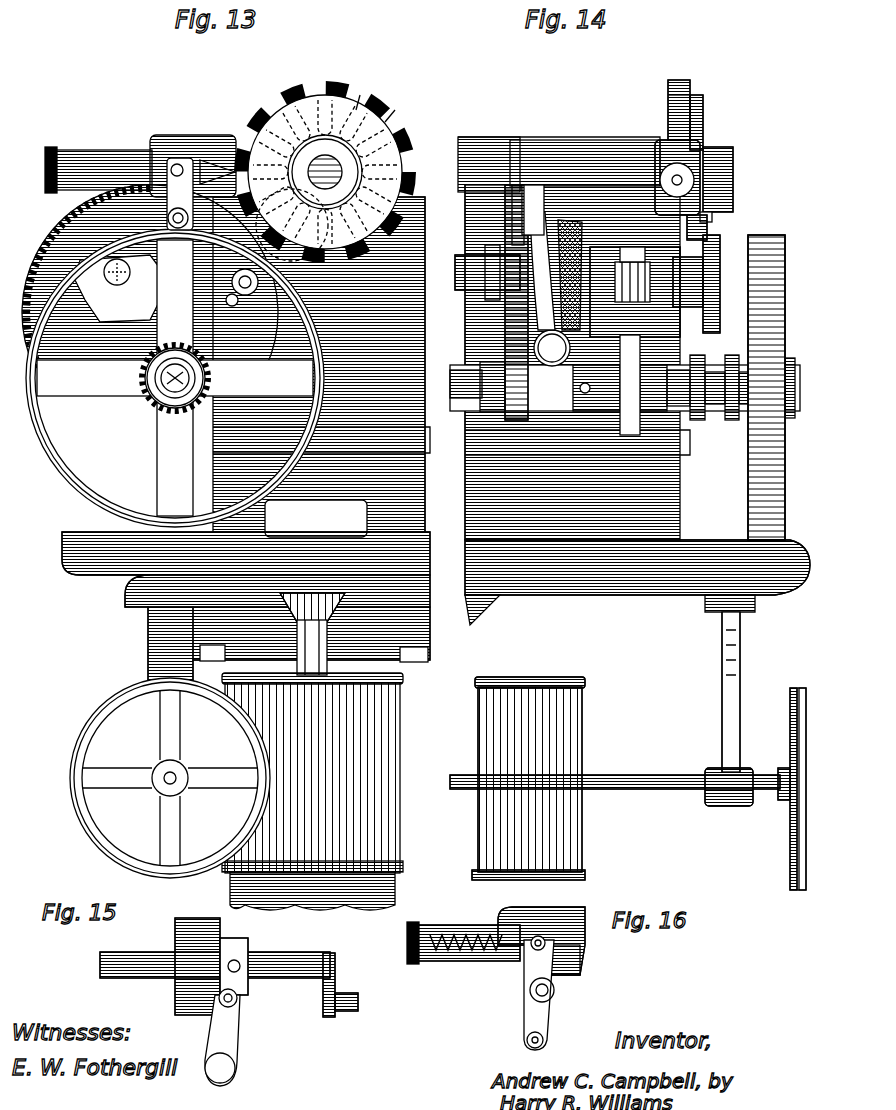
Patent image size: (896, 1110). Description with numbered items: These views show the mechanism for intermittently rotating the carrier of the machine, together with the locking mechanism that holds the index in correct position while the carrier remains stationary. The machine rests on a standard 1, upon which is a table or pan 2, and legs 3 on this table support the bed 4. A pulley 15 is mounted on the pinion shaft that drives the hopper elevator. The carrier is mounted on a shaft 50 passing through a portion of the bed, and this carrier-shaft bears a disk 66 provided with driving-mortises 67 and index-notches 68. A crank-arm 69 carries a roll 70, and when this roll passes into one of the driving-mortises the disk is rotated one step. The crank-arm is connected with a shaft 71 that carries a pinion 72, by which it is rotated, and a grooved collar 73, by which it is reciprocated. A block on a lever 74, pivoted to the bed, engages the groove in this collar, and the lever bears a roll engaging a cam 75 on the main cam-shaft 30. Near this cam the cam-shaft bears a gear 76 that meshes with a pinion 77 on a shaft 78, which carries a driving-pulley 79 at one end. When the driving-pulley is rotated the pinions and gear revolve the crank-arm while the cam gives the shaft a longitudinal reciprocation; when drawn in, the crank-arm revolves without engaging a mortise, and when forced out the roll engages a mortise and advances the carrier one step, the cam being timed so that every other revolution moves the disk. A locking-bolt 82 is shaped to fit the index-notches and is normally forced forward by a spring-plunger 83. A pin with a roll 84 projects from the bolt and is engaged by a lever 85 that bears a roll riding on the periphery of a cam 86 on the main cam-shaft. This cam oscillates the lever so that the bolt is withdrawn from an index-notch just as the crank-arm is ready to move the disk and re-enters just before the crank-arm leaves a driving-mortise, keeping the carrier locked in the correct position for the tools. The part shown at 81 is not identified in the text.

In FIG. 13, the standard 1 is at (404, 680).
In FIG. 14, the standard 1 is at (528, 778).
In FIG. 13, the table or pan 2 is at (80, 568).
In FIG. 14, the table or pan 2 is at (670, 592).
In FIG. 13, the legs 3 is at (360, 518).
In FIG. 13, the bed 4 is at (319, 364).
In FIG. 14, the bed 4 is at (569, 338).
In FIG. 13, the pulley 15 is at (100, 714).
In FIG. 14, the pulley 15 is at (790, 726).
In FIG. 13, the main cam-shaft 30 is at (109, 277).
In FIG. 14, the main cam-shaft 30 is at (462, 258).
In FIG. 13, the carrier-shaft 50 is at (330, 147).
In FIG. 14, the carrier-shaft 50 is at (735, 175).
In FIG. 13, the disk 66 is at (338, 72).
In FIG. 14, the disk 66 is at (679, 80).
In FIG. 13, the driving-mortises 67 is at (367, 83).
In FIG. 14, the driving-mortises 67 is at (695, 95).
In FIG. 13, the index-notches 68 is at (398, 97).
In FIG. 14, the index-notches 68 is at (668, 100).
In FIG. 13, the crank-arm 69 is at (258, 292).
In FIG. 14, the crank-arm 69 is at (708, 230).
In FIG. 15, the crank-arm 69 is at (335, 975).
In FIG. 13, the roll 70 is at (238, 305).
In FIG. 15, the roll 70 is at (345, 1012).
In FIG. 15, the shaft 71 is at (138, 970).
In FIG. 13, the pinion 72 is at (287, 215).
In FIG. 14, the pinion 72 is at (532, 185).
In FIG. 15, the pinion 72 is at (178, 935).
In FIG. 14, the grooved collar 73 is at (548, 210).
In FIG. 15, the grooved collar 73 is at (245, 945).
In FIG. 14, the lever 74 is at (505, 325).
In FIG. 15, the lever 74 is at (245, 1035).
In FIG. 14, the cam 75 is at (575, 220).
In FIG. 13, the gear 76 is at (55, 240).
In FIG. 14, the gear 76 is at (518, 185).
In FIG. 13, the pinion 77 is at (150, 400).
In FIG. 14, the pinion 77 is at (485, 422).
In FIG. 13, the shaft 78 is at (160, 405).
In FIG. 14, the shaft 78 is at (480, 352).
In FIG. 13, the driving-pulley 79 is at (80, 490).
In FIG. 14, the driving-pulley 79 is at (748, 468).
In FIG. 13, the pawl 81 is at (172, 150).
In FIG. 14, the pawl 81 is at (655, 148).
In FIG. 16, the pawl 81 is at (582, 965).
In FIG. 13, the locking-bolt 82 is at (220, 140).
In FIG. 16, the locking-bolt 82 is at (590, 935).
In FIG. 13, the spring-plunger 83 is at (152, 148).
In FIG. 14, the spring-plunger 83 is at (680, 178).
In FIG. 16, the spring-plunger 83 is at (490, 965).
In FIG. 13, the roll 84 is at (180, 160).
In FIG. 16, the roll 84 is at (539, 935).
In FIG. 13, the lever 85 is at (205, 155).
In FIG. 14, the lever 85 is at (712, 215).
In FIG. 16, the lever 85 is at (555, 1005).
In FIG. 13, the cam 86 is at (120, 288).
In FIG. 14, the cam 86 is at (720, 250).